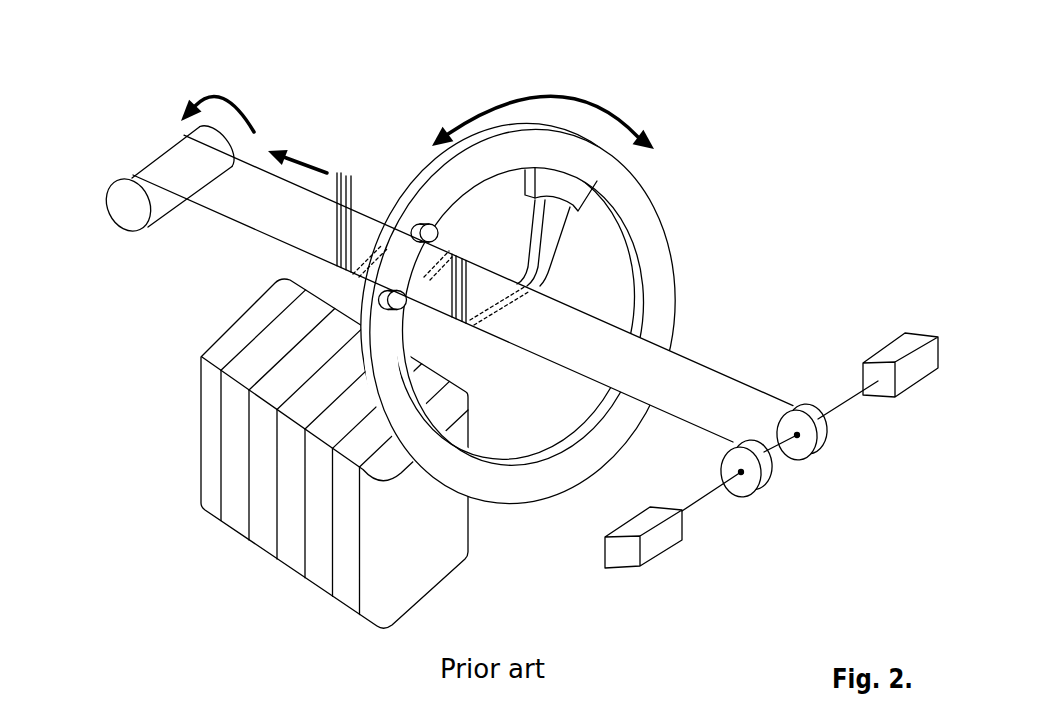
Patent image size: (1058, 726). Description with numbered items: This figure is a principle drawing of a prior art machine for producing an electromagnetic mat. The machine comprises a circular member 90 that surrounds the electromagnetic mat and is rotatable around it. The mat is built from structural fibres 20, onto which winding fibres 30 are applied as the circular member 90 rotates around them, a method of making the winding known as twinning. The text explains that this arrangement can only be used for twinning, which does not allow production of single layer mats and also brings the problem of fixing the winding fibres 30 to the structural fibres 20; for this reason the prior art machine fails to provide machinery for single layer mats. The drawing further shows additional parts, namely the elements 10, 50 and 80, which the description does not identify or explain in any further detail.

The prior art device 10 is at (177, 250).
The structural fibres 20 is at (732, 379).
The winding fibres 30 is at (349, 176).
The motor 50 is at (124, 130).
The bearings 80 is at (826, 481).
The circular member 90 is at (682, 167).